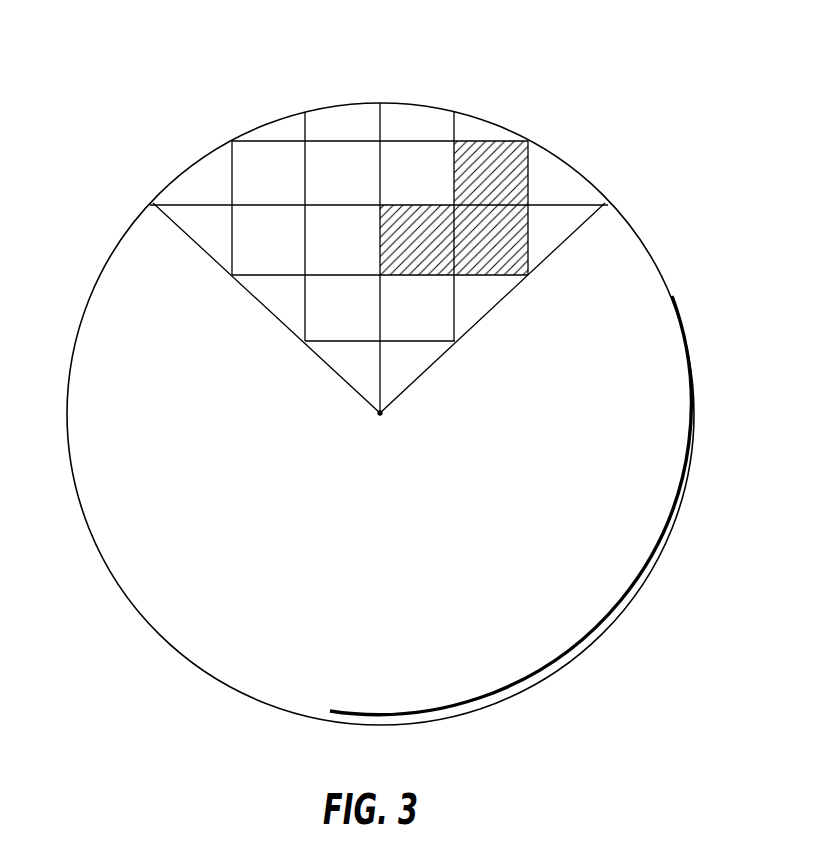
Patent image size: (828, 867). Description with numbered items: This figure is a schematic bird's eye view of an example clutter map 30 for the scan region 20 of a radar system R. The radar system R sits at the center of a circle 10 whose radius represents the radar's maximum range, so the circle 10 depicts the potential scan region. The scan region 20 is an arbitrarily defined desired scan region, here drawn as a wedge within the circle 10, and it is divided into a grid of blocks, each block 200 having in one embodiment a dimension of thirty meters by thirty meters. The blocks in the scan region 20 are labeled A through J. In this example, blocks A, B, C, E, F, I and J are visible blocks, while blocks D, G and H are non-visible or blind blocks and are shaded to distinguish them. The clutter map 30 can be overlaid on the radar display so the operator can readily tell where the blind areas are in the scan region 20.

The circle 10 is at (682, 320).
The scan region 20 is at (558, 187).
The clutter map 30 is at (388, 29).
The block 200 is at (310, 167).
The radar system R is at (383, 414).